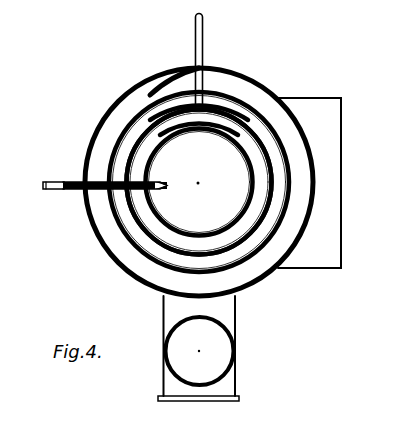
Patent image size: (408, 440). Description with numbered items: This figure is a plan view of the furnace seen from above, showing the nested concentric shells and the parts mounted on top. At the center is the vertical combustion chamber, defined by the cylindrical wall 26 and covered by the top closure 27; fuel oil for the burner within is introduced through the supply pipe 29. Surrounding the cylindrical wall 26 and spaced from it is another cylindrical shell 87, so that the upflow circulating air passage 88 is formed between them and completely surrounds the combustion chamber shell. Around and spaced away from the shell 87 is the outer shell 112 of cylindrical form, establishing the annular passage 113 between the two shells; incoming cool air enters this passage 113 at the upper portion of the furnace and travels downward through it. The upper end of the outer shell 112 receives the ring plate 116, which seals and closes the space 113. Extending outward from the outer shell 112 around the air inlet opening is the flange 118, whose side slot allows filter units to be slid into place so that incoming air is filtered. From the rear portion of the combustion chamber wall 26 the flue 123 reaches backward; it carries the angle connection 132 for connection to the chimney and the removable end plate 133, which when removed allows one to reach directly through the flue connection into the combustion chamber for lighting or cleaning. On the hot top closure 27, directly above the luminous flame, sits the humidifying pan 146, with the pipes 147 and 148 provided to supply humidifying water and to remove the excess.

The annular passage 113 is at (143, 91).
The outer shell 112 is at (115, 104).
The ring plate 116 is at (108, 133).
The pipe 148 is at (66, 181).
The pipe 147 is at (42, 190).
The humidifying pan 146 is at (199, 182).
The supply pipe 29 is at (204, 45).
The cylindrical shell 87 is at (224, 92).
The upflow circulating air passage 88 is at (232, 108).
The flange 118 is at (309, 183).
The top closure 27 is at (152, 229).
The cylindrical wall 26 is at (239, 248).
The flue 123 is at (226, 317).
The angle connection 132 is at (173, 372).
The removable end plate 133 is at (163, 403).